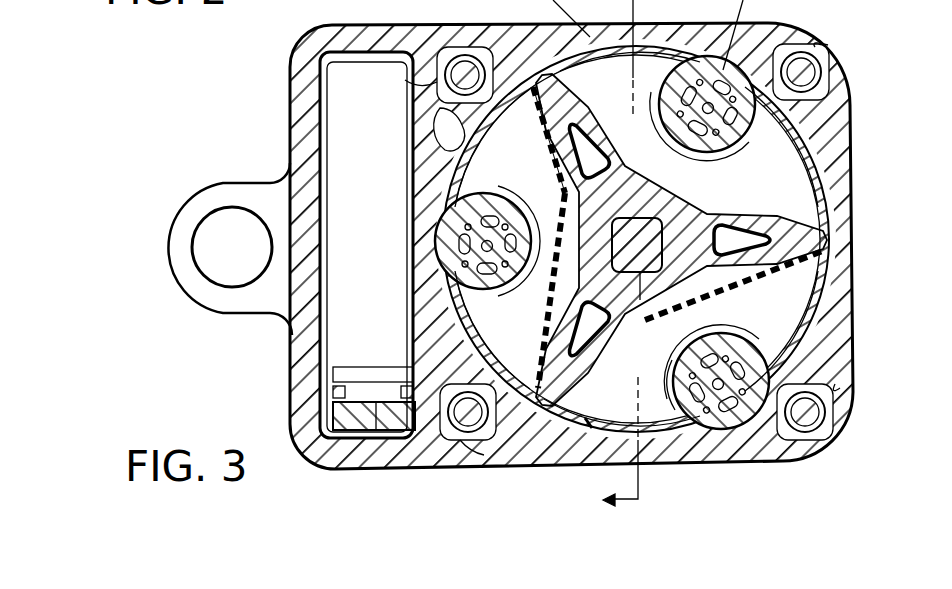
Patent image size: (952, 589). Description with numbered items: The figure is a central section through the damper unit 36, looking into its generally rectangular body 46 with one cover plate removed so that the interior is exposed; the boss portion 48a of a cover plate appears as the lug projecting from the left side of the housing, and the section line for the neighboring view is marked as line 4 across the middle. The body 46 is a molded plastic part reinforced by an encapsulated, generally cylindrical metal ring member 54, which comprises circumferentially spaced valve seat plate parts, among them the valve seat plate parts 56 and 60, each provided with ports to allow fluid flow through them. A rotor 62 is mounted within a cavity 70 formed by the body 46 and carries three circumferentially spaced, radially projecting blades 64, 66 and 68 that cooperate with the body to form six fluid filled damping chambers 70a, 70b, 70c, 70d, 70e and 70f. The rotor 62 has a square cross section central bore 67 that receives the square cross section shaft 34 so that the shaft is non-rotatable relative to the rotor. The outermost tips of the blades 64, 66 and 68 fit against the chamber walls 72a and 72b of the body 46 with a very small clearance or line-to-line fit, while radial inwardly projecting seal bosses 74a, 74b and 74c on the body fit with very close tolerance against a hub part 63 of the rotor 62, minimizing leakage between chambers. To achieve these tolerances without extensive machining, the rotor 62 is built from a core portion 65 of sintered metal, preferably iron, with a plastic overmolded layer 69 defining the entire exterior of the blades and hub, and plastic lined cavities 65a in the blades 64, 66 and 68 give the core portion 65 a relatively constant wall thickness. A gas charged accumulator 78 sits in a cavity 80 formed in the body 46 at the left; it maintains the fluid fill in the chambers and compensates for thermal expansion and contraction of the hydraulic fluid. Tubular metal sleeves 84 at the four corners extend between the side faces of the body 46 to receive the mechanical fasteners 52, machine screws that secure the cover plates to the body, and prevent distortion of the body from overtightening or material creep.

The damper unit 36 is at (327, 481).
The body 46 is at (853, 107).
The boss portion 48a is at (205, 311).
The gas charged accumulator 78 is at (334, 158).
The cavity 80 is at (332, 352).
The cavity 70 is at (790, 147).
The chamber wall 72a is at (490, 332).
The chamber wall 72b is at (835, 312).
The rotor 62 is at (706, 194).
The blade 68 is at (530, 85).
The plastic overmolded layer 69 is at (545, 430).
The core portion 65 is at (820, 298).
The blade 64 is at (808, 248).
The blade 66 is at (578, 430).
The central bore 67 is at (640, 300).
The shaft 34 is at (662, 272).
The seal boss 74a is at (553, 270).
The seal boss 74b is at (705, 182).
The seal boss 74c is at (762, 458).
The valve seat plate part 56 is at (450, 240).
The valve seat plate part 60 is at (718, 412).
The hub part 63 is at (700, 405).
The mechanical fasteners 52 is at (445, 92).
The tubular metal sleeves 84 is at (437, 82).
The metal ring member 54 is at (453, 128).
The damping chamber 70a is at (628, 407).
The damping chamber 70b is at (535, 351).
The damping chamber 70c is at (533, 167).
The damping chamber 70d is at (620, 94).
The damping chamber 70e is at (805, 214).
The damping chamber 70f is at (783, 314).
The plastic lined cavities 65a is at (588, 422).
The section line 4 is at (611, 255).